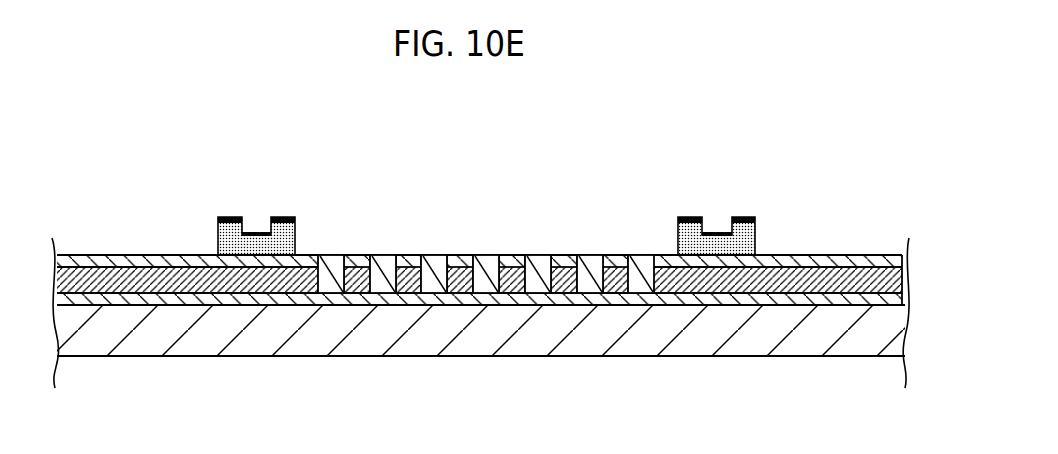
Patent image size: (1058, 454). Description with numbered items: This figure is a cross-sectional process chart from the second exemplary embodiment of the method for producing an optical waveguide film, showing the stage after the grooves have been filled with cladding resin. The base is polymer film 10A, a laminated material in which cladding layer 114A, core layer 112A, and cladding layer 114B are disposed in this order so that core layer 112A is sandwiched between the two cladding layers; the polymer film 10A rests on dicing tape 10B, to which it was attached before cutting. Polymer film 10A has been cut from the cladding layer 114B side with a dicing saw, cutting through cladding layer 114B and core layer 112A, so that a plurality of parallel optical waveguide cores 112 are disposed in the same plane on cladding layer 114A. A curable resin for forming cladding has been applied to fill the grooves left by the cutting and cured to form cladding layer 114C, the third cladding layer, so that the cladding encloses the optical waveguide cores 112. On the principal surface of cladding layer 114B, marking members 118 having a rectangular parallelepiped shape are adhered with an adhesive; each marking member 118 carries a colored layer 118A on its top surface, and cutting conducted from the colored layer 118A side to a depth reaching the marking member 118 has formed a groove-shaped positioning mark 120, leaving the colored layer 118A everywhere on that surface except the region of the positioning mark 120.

The polymer film 10A is at (496, 200).
The dicing tape 10B is at (805, 332).
The optical waveguide core 112 is at (508, 272).
The core layer 112A is at (825, 282).
The cladding layer 114A is at (862, 300).
The cladding layer 114B is at (479, 226).
The cladding layer 114C is at (437, 270).
The marking member 118 is at (295, 232).
The colored layer 118A is at (284, 218).
The positioning mark 120 is at (256, 227).